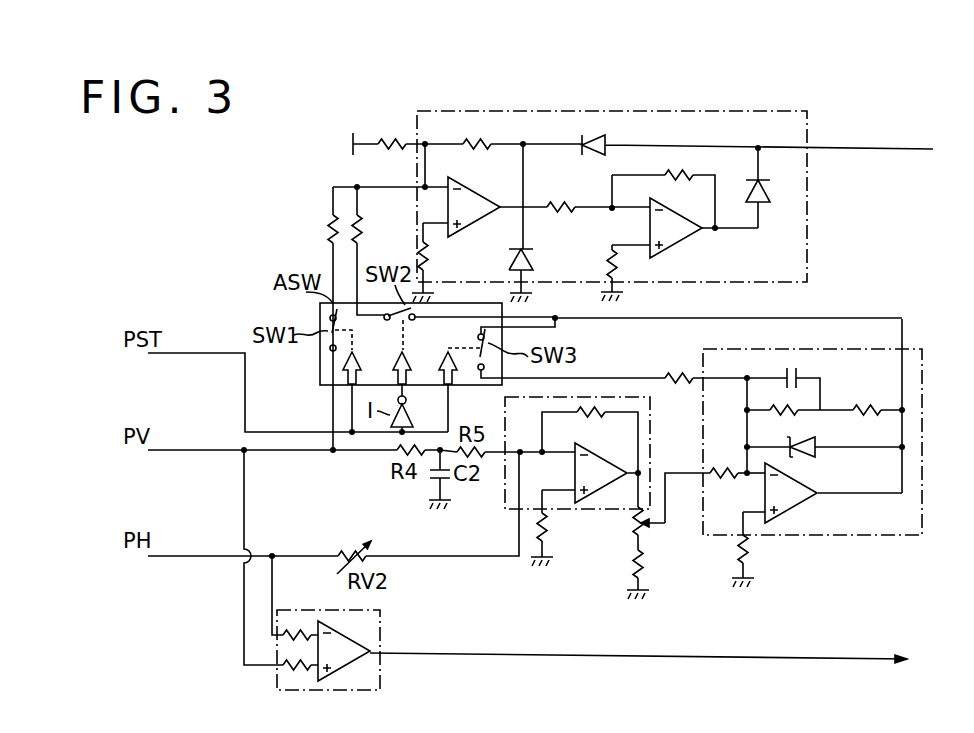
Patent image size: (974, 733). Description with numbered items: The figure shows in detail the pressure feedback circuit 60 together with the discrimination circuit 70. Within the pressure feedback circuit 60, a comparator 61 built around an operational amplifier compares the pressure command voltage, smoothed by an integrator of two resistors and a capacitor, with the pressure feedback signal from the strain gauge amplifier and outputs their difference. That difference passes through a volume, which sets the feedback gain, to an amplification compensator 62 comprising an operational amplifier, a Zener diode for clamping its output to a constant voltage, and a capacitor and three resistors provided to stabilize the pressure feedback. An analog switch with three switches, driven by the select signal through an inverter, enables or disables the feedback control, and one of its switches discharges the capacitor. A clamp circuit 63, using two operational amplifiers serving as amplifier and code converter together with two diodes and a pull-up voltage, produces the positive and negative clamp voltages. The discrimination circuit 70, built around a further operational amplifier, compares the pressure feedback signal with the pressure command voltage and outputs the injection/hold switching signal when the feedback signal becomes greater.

The pressure feedback circuit 60 is at (400, 89).
The comparator 61 is at (583, 509).
The amplification compensator 62 is at (880, 535).
The clamp circuit 63 is at (807, 113).
The discrimination circuit 70 is at (382, 663).